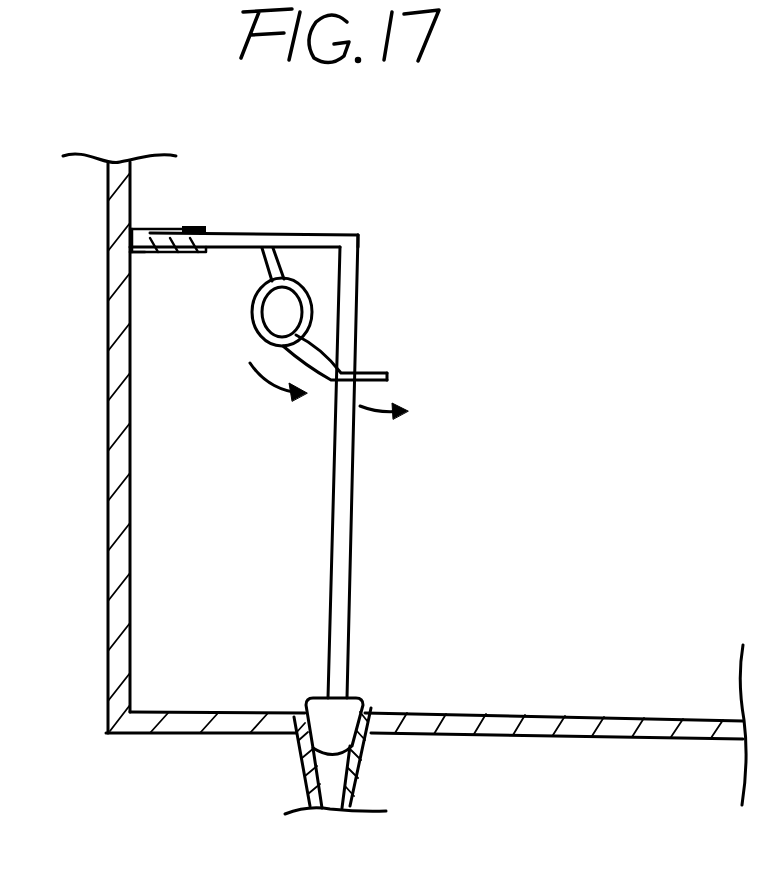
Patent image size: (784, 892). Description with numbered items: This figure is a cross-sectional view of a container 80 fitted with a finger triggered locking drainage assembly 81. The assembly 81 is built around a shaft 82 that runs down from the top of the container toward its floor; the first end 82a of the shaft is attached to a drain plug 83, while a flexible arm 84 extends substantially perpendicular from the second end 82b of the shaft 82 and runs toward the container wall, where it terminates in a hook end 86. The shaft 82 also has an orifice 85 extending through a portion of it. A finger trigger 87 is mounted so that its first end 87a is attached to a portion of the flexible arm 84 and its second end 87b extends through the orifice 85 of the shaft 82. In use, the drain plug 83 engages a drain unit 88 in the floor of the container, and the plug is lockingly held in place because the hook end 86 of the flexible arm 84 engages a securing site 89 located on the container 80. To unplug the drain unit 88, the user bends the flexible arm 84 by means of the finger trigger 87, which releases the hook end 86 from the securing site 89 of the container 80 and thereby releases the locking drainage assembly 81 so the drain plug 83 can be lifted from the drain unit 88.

The container 80 is at (106, 733).
The finger triggered locking drainage assembly 81 is at (445, 185).
The shaft 82 is at (352, 532).
The first end of shaft 82a is at (345, 697).
The second end of shaft 82b is at (362, 247).
The drain plug 83 is at (343, 725).
The flexible arm 84 is at (292, 235).
The orifice 85 is at (336, 386).
The hook end 86 is at (152, 240).
The finger trigger 87 is at (310, 308).
The first end of finger trigger 87a is at (262, 262).
The second end of finger trigger 87b is at (390, 375).
The drain unit 88 is at (263, 789).
The securing site 89 is at (138, 252).